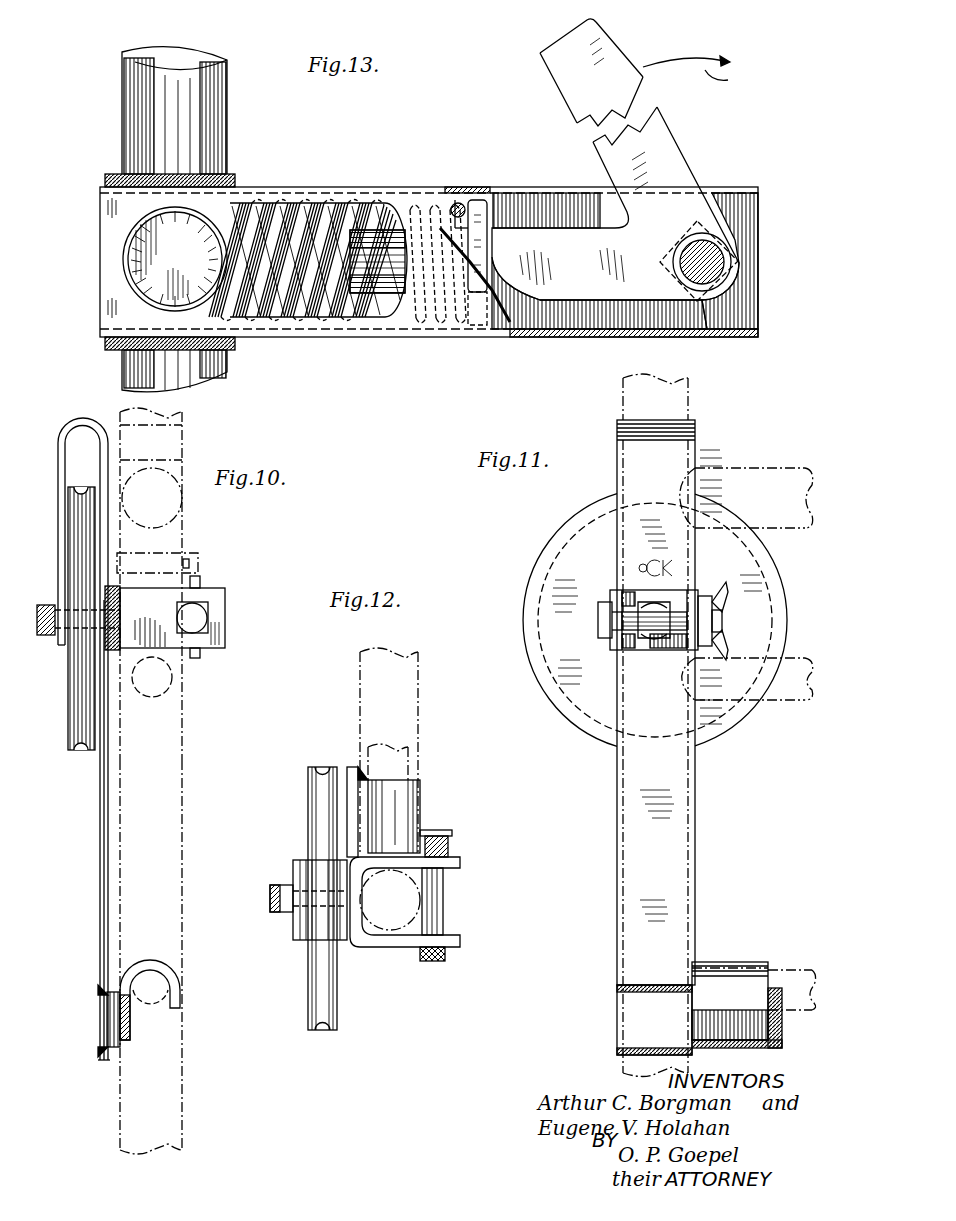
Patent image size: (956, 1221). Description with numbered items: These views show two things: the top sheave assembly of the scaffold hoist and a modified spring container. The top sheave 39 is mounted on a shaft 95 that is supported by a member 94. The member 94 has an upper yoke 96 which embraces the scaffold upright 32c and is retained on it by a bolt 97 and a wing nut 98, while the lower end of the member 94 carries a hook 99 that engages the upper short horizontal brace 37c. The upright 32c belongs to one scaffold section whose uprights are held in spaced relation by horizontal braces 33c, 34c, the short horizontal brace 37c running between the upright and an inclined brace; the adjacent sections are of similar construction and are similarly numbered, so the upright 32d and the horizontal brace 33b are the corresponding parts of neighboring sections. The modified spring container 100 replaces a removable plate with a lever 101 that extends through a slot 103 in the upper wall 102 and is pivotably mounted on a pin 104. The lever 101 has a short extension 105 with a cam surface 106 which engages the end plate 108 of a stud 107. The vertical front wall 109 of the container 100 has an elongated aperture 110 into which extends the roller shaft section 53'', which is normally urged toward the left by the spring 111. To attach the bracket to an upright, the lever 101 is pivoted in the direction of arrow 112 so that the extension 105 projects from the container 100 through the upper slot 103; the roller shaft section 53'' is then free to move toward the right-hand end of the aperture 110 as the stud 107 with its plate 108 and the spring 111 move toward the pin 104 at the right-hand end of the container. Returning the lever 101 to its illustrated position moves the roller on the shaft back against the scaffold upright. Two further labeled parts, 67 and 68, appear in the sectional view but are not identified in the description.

In FIG. 13, the upper pipe section 67 is at (220, 93).
In FIG. 13, the lower pipe section 68 is at (125, 378).
In FIG. 13, the roller shaft section 53'' is at (136, 259).
In FIG. 13, the modified spring container 100 is at (431, 136).
In FIG. 13, the lever 101 is at (645, 88).
In FIG. 13, the upper wall 102 is at (481, 198).
In FIG. 13, the slot 103 is at (740, 190).
In FIG. 13, the pin 104 is at (716, 265).
In FIG. 13, the short extension 105 is at (602, 290).
In FIG. 13, the cam surface 106 is at (536, 292).
In FIG. 13, the stud 107 is at (396, 266).
In FIG. 13, the end plate 108 is at (470, 187).
In FIG. 13, the vertical front wall 109 is at (253, 203).
In FIG. 13, the elongated aperture 110 is at (276, 312).
In FIG. 13, the spring 111 is at (330, 215).
In FIG. 13, the arrow 112 is at (706, 75).
In FIG. 10, the upright 32c is at (183, 916).
In FIG. 12, the upright 32c is at (415, 915).
In FIG. 11, the upright 32c is at (625, 932).
In FIG. 10, the upright 32d is at (185, 432).
In FIG. 11, the upright 32d is at (694, 403).
In FIG. 10, the horizontal brace 33c is at (183, 510).
In FIG. 11, the horizontal brace 33c is at (756, 480).
In FIG. 12, the horizontal brace 33b is at (418, 722).
In FIG. 10, the horizontal brace 34c is at (170, 690).
In FIG. 11, the horizontal brace 34c is at (787, 702).
In FIG. 10, the short horizontal brace 37c is at (158, 1007).
In FIG. 12, the short horizontal brace 37c is at (410, 768).
In FIG. 11, the short horizontal brace 37c is at (787, 970).
In FIG. 10, the top sheave 39 is at (70, 704).
In FIG. 12, the top sheave 39 is at (337, 1013).
In FIG. 11, the top sheave 39 is at (584, 718).
In FIG. 10, the member 94 is at (98, 835).
In FIG. 12, the member 94 is at (313, 925).
In FIG. 11, the member 94 is at (633, 880).
In FIG. 10, the shaft 95 is at (36, 628).
In FIG. 12, the shaft 95 is at (270, 896).
In FIG. 11, the shaft 95 is at (655, 634).
In FIG. 10, the upper yoke 96 is at (218, 598).
In FIG. 12, the upper yoke 96 is at (390, 942).
In FIG. 11, the upper yoke 96 is at (615, 642).
In FIG. 10, the bolt 97 is at (203, 618).
In FIG. 12, the bolt 97 is at (441, 921).
In FIG. 11, the bolt 97 is at (628, 615).
In FIG. 10, the wing nut 98 is at (198, 584).
In FIG. 12, the wing nut 98 is at (451, 848).
In FIG. 11, the wing nut 98 is at (707, 599).
In FIG. 10, the hook 99 is at (182, 990).
In FIG. 12, the hook 99 is at (420, 801).
In FIG. 11, the hook 99 is at (722, 962).